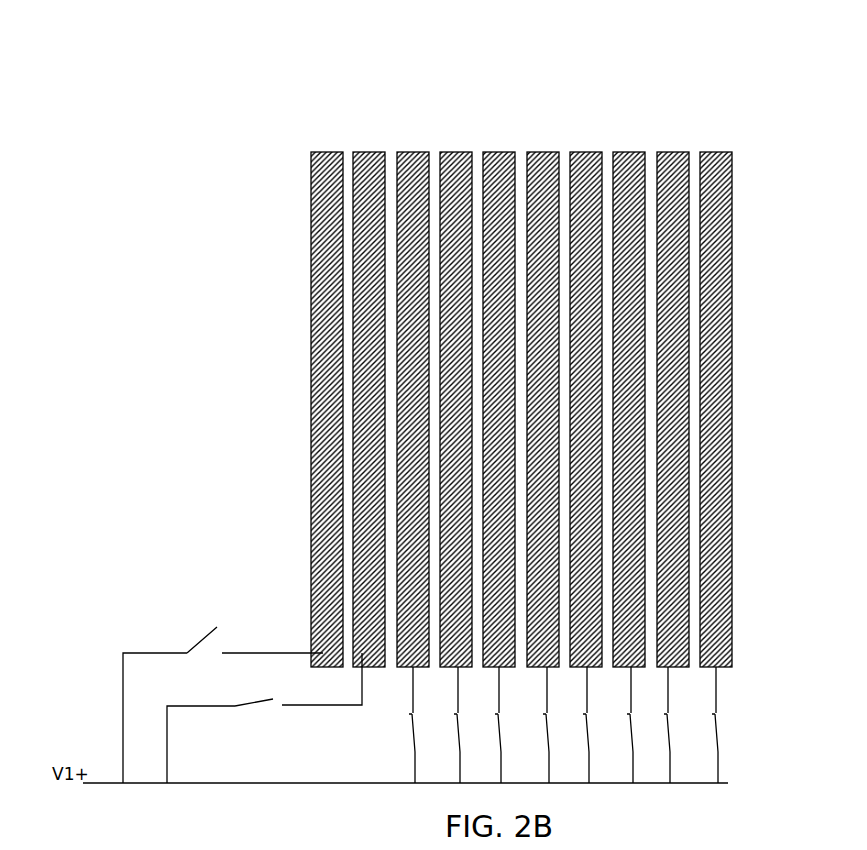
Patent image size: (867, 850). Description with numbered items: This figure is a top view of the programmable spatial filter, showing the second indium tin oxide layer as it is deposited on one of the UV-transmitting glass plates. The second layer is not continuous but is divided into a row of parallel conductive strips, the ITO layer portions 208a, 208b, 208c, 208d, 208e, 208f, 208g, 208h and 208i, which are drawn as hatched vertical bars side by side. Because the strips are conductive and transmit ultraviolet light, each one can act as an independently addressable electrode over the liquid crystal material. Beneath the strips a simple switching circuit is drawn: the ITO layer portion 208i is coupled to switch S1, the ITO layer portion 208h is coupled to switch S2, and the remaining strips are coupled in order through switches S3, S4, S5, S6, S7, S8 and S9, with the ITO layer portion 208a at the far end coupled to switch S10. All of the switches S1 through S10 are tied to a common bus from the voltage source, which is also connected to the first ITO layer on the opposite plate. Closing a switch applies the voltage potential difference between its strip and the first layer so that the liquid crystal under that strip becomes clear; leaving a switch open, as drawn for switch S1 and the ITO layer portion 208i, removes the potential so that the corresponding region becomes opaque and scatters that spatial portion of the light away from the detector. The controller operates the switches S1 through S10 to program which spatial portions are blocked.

The ITO layer portion 208a is at (673, 173).
The ITO layer portion 208b is at (627, 173).
The ITO layer portion 208c is at (582, 173).
The ITO layer portion 208d is at (545, 173).
The ITO layer portion 208e is at (500, 173).
The ITO layer portion 208f is at (457, 173).
The ITO layer portion 208g is at (410, 173).
The ITO layer portion 208h is at (383, 173).
The ITO layer portion 208i is at (332, 163).
The switch S1 is at (223, 705).
The switch S2 is at (264, 718).
The switch S3 is at (399, 725).
The switch S4 is at (444, 725).
The switch S5 is at (485, 725).
The switch S6 is at (533, 725).
The switch S7 is at (573, 725).
The switch S8 is at (617, 725).
The switch S9 is at (654, 725).
The switch S10 is at (702, 725).